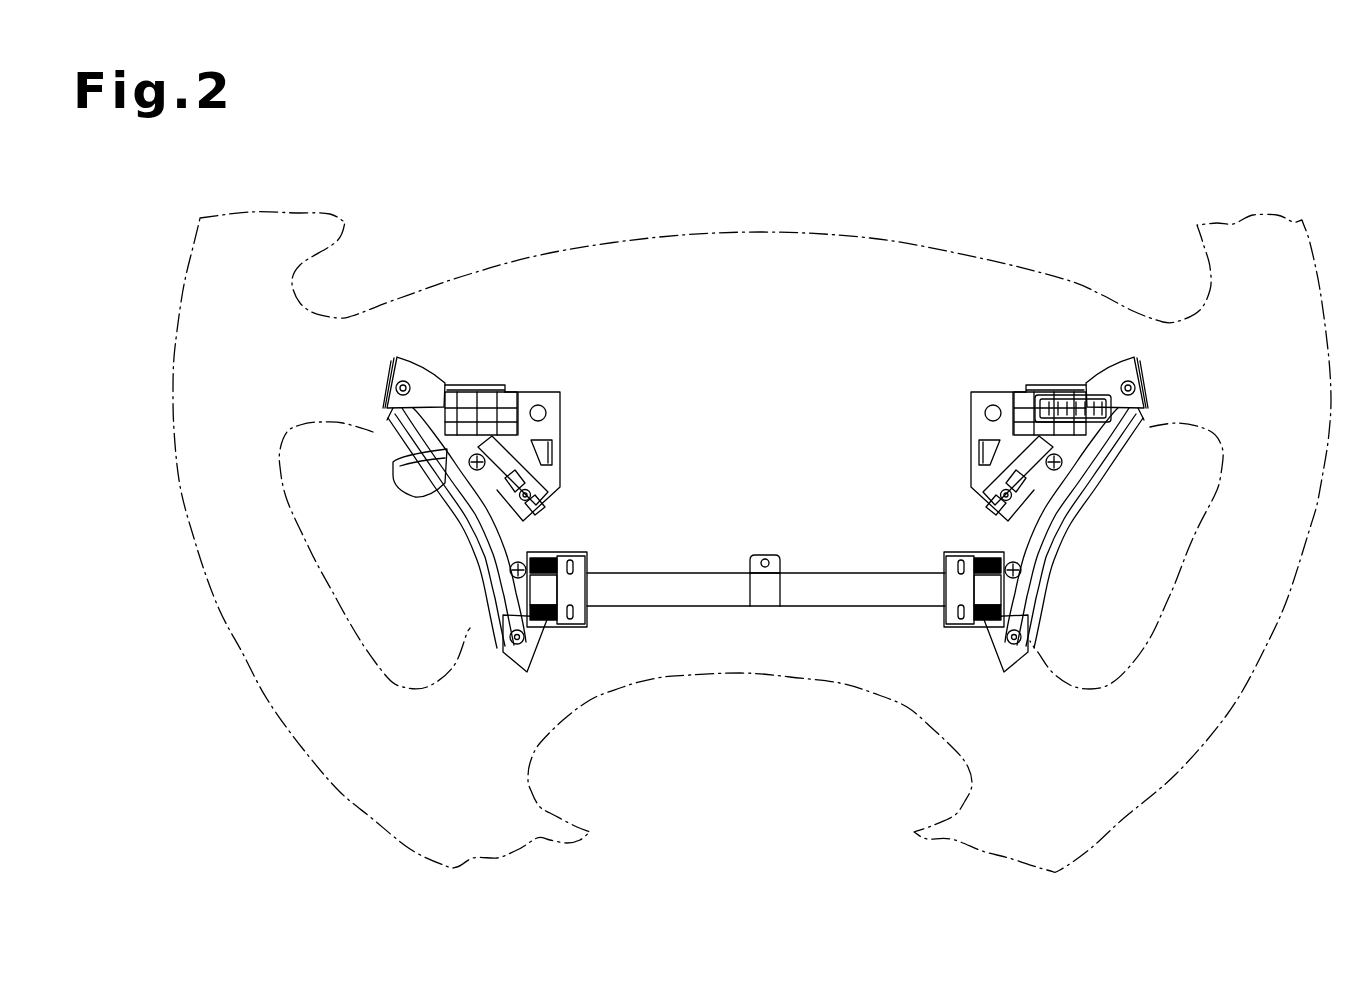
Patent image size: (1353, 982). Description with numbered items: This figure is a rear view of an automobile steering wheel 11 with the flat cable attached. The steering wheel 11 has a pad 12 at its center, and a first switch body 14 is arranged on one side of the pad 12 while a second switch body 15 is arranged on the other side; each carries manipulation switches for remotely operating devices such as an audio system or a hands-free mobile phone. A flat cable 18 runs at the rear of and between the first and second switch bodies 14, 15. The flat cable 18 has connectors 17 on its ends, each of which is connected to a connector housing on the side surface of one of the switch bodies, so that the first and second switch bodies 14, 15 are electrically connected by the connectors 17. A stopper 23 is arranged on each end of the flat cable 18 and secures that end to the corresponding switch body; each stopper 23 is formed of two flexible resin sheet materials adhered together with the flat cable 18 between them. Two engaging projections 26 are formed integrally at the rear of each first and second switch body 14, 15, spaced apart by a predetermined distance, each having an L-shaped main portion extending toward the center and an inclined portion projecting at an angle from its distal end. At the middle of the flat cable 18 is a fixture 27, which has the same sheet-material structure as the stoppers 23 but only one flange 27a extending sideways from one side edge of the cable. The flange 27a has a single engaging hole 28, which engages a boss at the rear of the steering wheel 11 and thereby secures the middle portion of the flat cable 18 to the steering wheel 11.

The steering wheel 11 is at (851, 235).
The pad 12 is at (673, 236).
The first switch body 14 is at (557, 524).
The second switch body 15 is at (990, 518).
The connector 17 is at (530, 590).
The flat cable 18 is at (807, 577).
The stopper 23 is at (573, 588).
The engaging projection 26 is at (573, 568).
The fixture 27 is at (763, 597).
The flange 27a is at (750, 563).
The engaging hole 28 is at (767, 553).